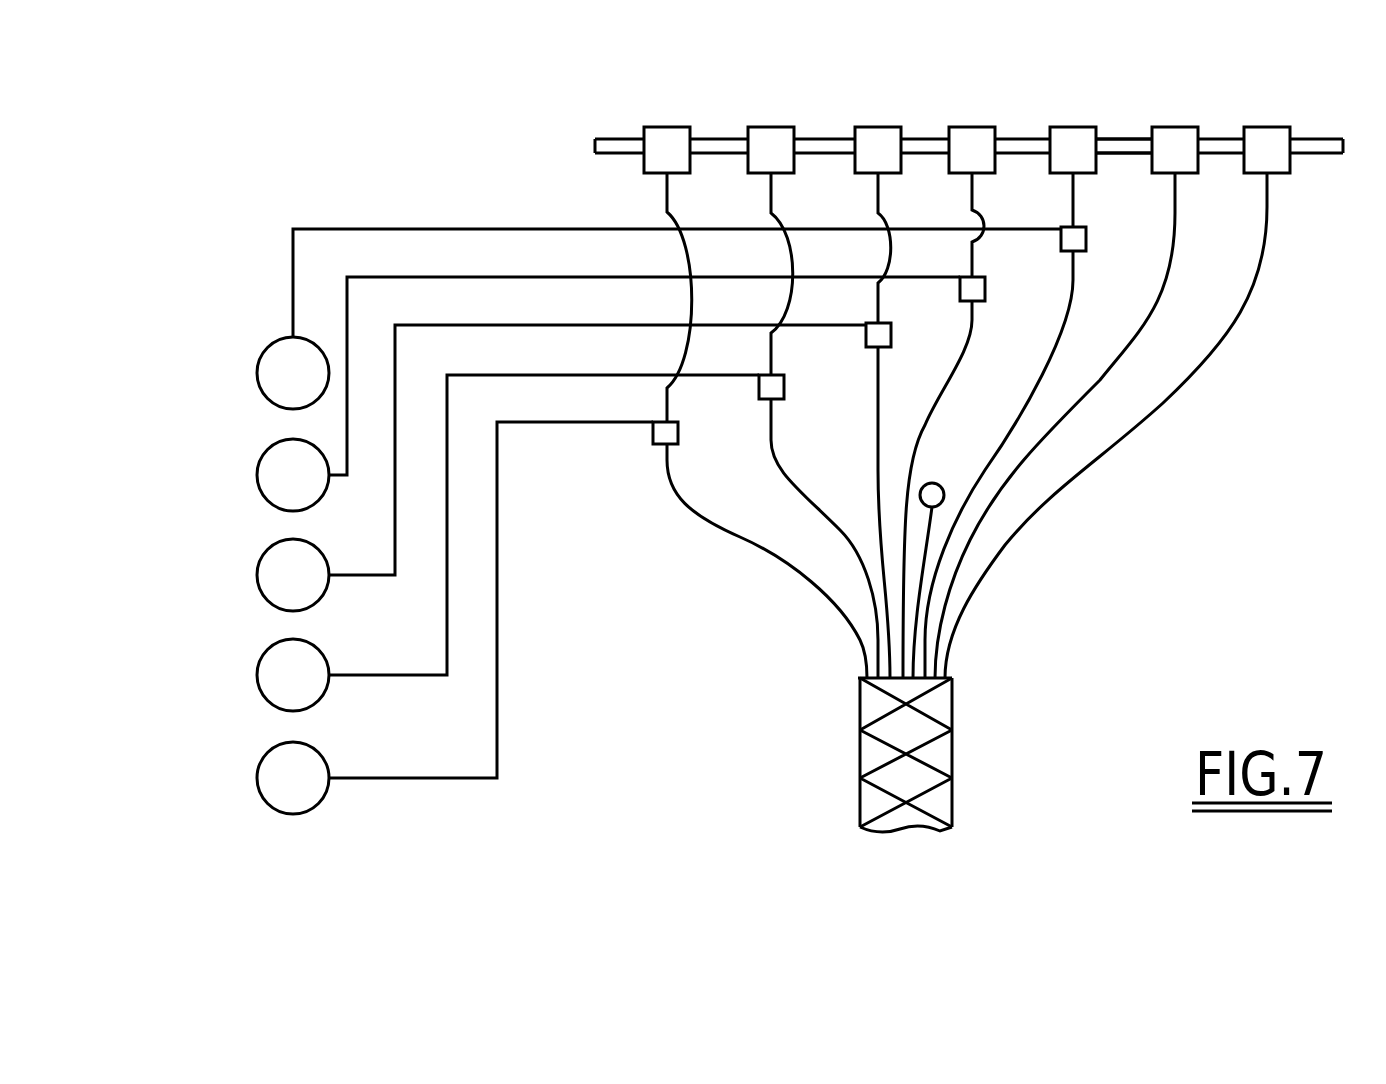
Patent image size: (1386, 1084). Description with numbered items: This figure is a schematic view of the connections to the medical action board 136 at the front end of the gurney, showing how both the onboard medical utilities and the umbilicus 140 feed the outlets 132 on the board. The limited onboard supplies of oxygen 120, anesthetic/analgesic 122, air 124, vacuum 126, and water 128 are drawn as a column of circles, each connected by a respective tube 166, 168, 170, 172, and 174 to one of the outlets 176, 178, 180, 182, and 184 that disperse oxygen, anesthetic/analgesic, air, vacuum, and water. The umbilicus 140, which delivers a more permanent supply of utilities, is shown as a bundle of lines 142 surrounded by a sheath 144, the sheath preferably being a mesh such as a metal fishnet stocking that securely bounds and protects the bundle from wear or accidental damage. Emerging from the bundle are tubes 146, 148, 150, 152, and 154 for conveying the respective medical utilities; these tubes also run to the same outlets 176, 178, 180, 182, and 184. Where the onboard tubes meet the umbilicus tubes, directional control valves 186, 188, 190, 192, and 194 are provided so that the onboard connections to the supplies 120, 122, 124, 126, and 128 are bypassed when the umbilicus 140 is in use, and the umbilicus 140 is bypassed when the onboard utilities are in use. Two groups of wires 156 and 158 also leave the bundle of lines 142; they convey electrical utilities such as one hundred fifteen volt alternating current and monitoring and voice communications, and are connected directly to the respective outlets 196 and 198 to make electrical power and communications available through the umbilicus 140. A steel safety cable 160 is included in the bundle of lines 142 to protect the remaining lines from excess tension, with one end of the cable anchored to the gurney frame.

The oxygen 120 is at (257, 778).
The anesthetic/analgesic 122 is at (257, 675).
The air 124 is at (257, 575).
The vacuum 126 is at (257, 475).
The water 128 is at (257, 373).
The medical outlets 132 is at (901, 118).
The medical action board 136 is at (1108, 138).
The umbilicus 140 is at (946, 754).
The bundle of lines 142 is at (957, 654).
The sheath 144 is at (868, 757).
The tube 146 is at (726, 536).
The tube 148 is at (786, 478).
The tube 150 is at (877, 410).
The tube 152 is at (967, 350).
The tube 154 is at (1053, 356).
The group of wires 156 is at (1176, 212).
The group of wires 158 is at (1268, 208).
The steel safety cable 160 is at (933, 483).
The tube 166 is at (370, 780).
The tube 168 is at (348, 677).
The tube 170 is at (350, 578).
The tube 172 is at (333, 478).
The tube 174 is at (323, 228).
The outlet 176 is at (662, 127).
The outlet 178 is at (770, 127).
The outlet 180 is at (878, 127).
The outlet 182 is at (972, 127).
The outlet 184 is at (1073, 127).
The directional control valve 186 is at (652, 433).
The directional control valve 188 is at (757, 399).
The directional control valve 190 is at (866, 336).
The directional control valve 192 is at (961, 289).
The directional control valve 194 is at (1063, 252).
The outlet 196 is at (1175, 127).
The outlet 198 is at (1267, 127).